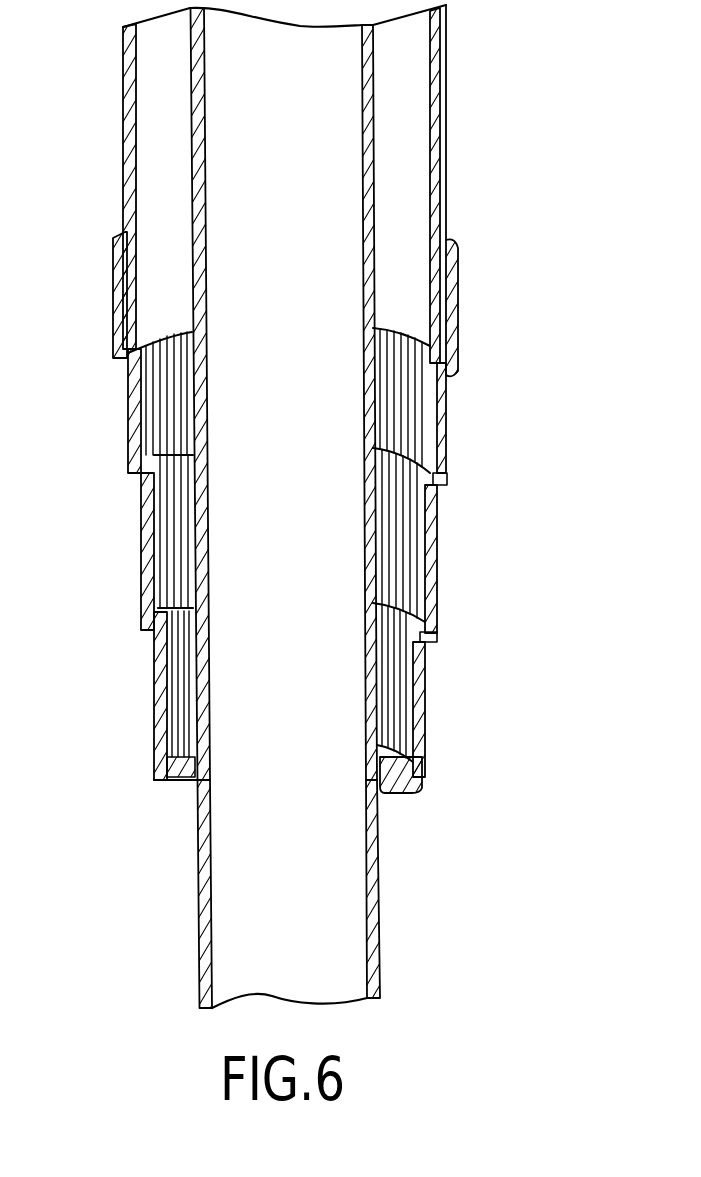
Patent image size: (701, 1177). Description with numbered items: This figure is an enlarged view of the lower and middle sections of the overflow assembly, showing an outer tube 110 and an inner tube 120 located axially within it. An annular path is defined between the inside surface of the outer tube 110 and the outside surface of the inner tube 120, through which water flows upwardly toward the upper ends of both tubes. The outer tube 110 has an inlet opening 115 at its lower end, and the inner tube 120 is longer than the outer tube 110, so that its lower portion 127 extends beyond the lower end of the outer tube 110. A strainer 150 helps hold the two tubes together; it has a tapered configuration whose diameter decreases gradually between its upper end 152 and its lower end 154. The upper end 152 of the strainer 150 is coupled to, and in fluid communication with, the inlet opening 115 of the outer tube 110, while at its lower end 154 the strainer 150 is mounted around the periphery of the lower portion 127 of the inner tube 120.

The outer tube 110 is at (433, 123).
The inlet opening 115 is at (180, 334).
The inner tube 120 is at (215, 213).
The lower portion 127 is at (210, 693).
The strainer 150 is at (447, 472).
The upper end 152 is at (452, 250).
The lower end 154 is at (417, 793).